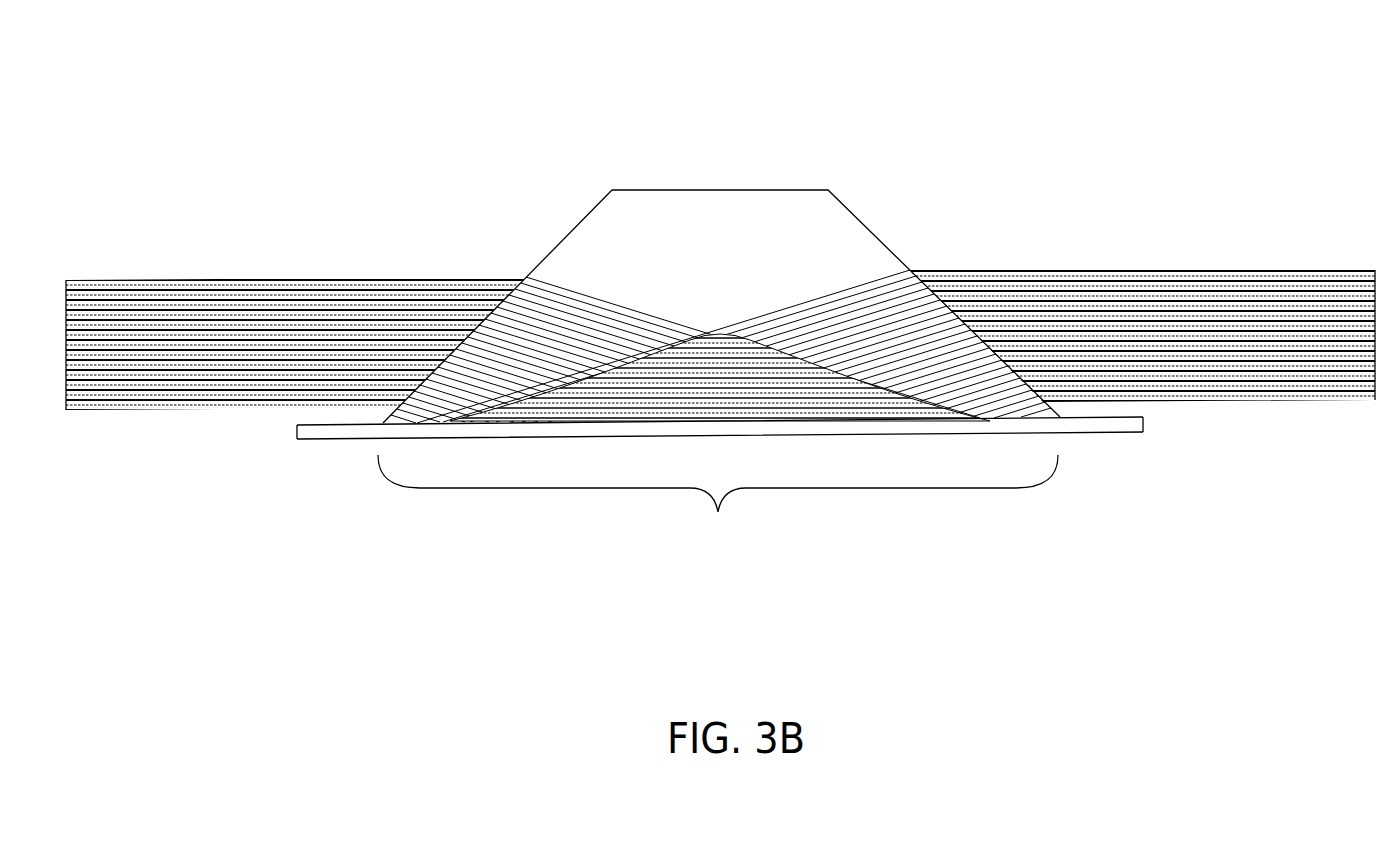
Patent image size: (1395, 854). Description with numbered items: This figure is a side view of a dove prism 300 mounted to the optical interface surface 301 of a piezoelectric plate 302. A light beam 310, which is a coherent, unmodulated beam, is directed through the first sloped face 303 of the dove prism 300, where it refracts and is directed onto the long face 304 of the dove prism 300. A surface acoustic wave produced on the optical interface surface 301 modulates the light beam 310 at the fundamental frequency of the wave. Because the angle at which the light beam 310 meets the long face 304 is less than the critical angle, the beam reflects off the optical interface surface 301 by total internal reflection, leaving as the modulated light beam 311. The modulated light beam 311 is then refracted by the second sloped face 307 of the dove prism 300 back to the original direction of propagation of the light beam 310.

The dove prism 300 is at (693, 125).
The optical interface surface 301 is at (338, 424).
The piezoelectric plate 302 is at (1104, 426).
The first sloped face 303 is at (863, 223).
The long face 304 is at (718, 512).
The second sloped face 307 is at (547, 255).
The light beam 310 is at (1293, 293).
The modulated light beam 311 is at (190, 278).